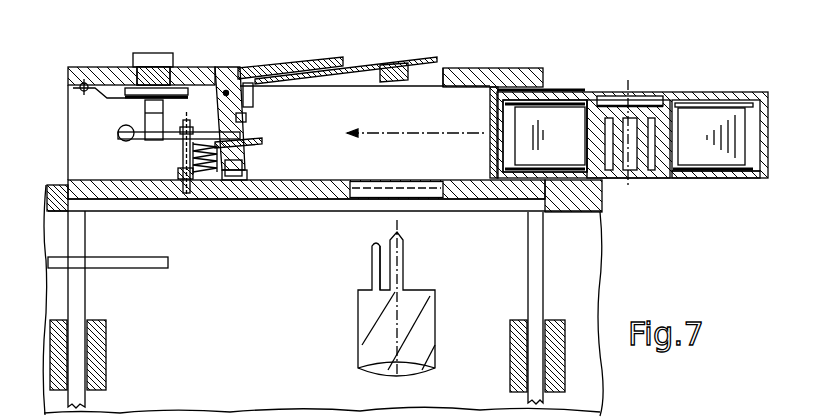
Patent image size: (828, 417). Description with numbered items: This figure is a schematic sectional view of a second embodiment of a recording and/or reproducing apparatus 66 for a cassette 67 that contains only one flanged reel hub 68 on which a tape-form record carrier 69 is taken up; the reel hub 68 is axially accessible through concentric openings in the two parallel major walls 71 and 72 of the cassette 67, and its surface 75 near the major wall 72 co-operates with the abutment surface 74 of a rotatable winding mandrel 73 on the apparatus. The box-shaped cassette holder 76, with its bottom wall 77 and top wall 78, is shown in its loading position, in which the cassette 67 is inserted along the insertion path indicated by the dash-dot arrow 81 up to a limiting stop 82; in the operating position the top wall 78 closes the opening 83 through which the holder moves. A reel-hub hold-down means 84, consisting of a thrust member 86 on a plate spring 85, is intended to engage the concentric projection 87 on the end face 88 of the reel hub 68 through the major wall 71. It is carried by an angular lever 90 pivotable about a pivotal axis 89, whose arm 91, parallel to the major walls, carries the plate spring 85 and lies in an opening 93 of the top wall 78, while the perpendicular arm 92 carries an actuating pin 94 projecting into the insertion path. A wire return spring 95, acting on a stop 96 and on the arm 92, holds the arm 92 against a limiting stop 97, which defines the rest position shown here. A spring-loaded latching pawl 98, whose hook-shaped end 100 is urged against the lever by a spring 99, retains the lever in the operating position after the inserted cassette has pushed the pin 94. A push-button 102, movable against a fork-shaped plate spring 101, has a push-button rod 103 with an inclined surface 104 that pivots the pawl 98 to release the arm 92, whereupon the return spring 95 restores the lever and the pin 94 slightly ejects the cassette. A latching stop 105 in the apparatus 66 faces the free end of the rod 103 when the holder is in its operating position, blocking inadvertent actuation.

The recording and/or reproducing apparatus 66 is at (598, 302).
The cassette 67 is at (632, 115).
The reel hub 68 is at (665, 148).
The record carrier 69 is at (738, 135).
The major wall 71 is at (695, 97).
The major wall 72 is at (696, 176).
The winding mandrel 73 is at (393, 298).
The abutment surface 74 is at (415, 290).
The surface of the reel hub 75 is at (613, 180).
The cassette holder 76 is at (391, 101).
The bottom wall 77 is at (312, 190).
The top wall 78 is at (98, 73).
The dash-dot arrow 81 is at (385, 137).
The limiting stop 82 is at (255, 96).
The opening 83 is at (88, 213).
The reel-hub hold-down means 84 is at (337, 62).
The plate spring 85 is at (378, 62).
The thrust member 86 is at (385, 83).
The concentric projection 87 is at (628, 90).
The end face 88 is at (605, 92).
The pivotal axis 89 is at (222, 88).
The angular lever 90 is at (218, 91).
The lever arm 91 is at (322, 63).
The lever arm 92 is at (233, 181).
The opening 93 is at (440, 78).
The actuating pin 94 is at (260, 144).
The return spring 95 is at (212, 178).
The stop 96 is at (180, 172).
The limiting stop 97 is at (243, 165).
The latching pawl 98 is at (184, 140).
The spring 99 is at (120, 140).
The hook-shaped end 100 is at (240, 118).
The fork-shaped plate spring 101 is at (90, 92).
The push-button 102 is at (150, 60).
The push-button rod 103 is at (150, 107).
The inclined surface 104 is at (150, 140).
The latching stop 105 is at (115, 269).